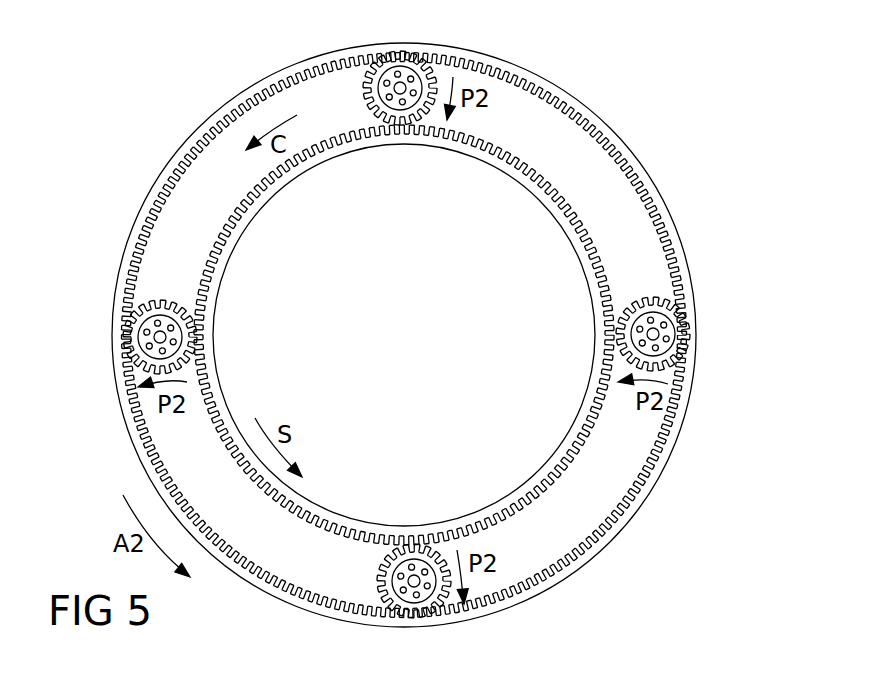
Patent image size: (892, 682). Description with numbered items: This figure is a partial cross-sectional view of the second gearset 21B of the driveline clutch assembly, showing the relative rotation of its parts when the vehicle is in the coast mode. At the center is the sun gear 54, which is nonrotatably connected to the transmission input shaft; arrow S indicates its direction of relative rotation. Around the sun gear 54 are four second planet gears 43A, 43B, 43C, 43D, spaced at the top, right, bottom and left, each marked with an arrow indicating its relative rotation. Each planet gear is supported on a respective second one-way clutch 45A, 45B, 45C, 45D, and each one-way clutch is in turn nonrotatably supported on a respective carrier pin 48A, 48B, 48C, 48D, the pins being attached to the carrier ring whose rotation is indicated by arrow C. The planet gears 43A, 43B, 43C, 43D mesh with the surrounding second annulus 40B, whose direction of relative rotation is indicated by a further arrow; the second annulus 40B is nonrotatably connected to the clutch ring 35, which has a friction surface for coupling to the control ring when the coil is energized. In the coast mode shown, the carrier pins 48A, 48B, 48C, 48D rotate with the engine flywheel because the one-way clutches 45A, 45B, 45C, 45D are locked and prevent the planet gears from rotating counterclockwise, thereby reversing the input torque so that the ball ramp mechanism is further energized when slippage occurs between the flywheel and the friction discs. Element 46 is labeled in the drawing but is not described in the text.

The second gearset 21B is at (658, 526).
The clutch ring 35 is at (650, 242).
The second annulus 40B is at (437, 328).
The second planet gear 43A is at (434, 63).
The second planet gear 43B is at (698, 325).
The second planet gear 43C is at (412, 596).
The second planet gear 43D is at (120, 317).
The second one-way clutch 45A is at (407, 55).
The second one-way clutch 45B is at (705, 343).
The second one-way clutch 45C is at (490, 603).
The second one-way clutch 45D is at (114, 313).
The sun gear 46 is at (383, 329).
The carrier pin 48A is at (400, 88).
The carrier pin 48B is at (655, 333).
The carrier pin 48C is at (417, 583).
The carrier pin 48D is at (160, 335).
The sun gear 54 is at (222, 412).